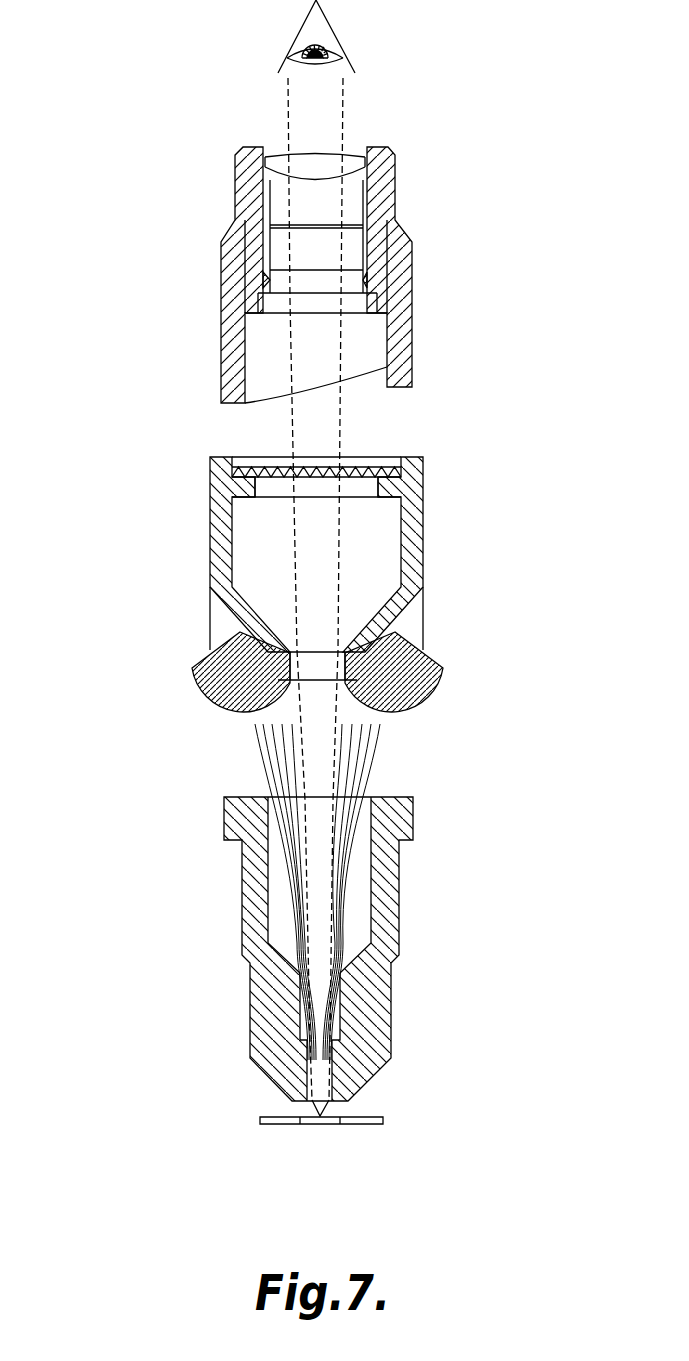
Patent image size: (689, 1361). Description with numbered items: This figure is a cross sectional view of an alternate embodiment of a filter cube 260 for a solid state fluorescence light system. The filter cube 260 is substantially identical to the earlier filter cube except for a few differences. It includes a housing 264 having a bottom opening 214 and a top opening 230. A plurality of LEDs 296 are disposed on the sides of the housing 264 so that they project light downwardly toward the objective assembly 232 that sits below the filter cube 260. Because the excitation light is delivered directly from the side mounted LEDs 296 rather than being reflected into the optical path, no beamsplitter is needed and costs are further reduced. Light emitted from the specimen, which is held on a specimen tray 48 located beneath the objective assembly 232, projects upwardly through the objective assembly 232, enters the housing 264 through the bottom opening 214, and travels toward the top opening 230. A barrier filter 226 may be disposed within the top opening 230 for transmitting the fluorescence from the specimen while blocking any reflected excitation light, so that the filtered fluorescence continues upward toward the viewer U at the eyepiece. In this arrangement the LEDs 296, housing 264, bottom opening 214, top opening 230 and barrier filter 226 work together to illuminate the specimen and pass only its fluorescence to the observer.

The user eye U is at (337, 25).
The filter cube 260 is at (130, 478).
The barrier filter 226 is at (373, 463).
The top opening 230 is at (365, 490).
The housing 264 is at (423, 553).
The bottom opening 214 is at (200, 668).
The LEDs 296 is at (208, 692).
The objective assembly 232 is at (412, 918).
The specimen tray 48 is at (383, 1120).